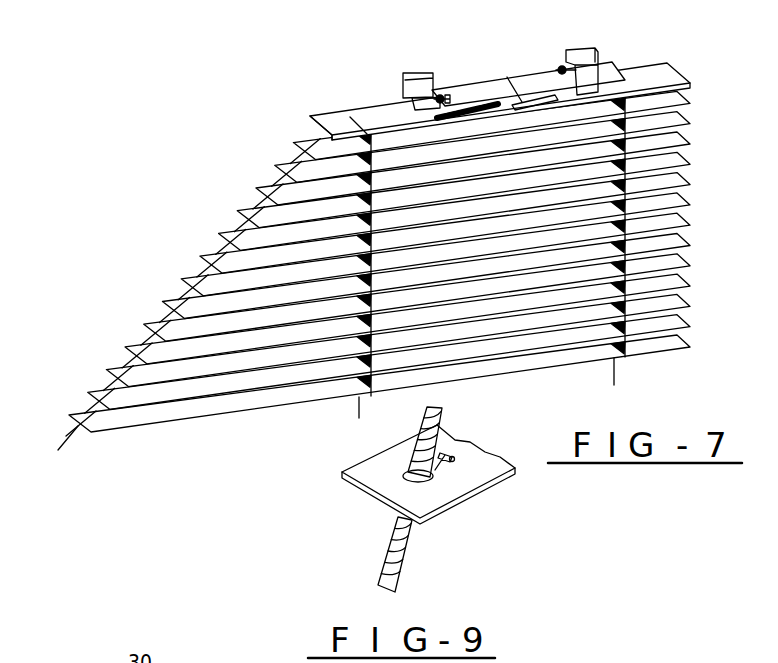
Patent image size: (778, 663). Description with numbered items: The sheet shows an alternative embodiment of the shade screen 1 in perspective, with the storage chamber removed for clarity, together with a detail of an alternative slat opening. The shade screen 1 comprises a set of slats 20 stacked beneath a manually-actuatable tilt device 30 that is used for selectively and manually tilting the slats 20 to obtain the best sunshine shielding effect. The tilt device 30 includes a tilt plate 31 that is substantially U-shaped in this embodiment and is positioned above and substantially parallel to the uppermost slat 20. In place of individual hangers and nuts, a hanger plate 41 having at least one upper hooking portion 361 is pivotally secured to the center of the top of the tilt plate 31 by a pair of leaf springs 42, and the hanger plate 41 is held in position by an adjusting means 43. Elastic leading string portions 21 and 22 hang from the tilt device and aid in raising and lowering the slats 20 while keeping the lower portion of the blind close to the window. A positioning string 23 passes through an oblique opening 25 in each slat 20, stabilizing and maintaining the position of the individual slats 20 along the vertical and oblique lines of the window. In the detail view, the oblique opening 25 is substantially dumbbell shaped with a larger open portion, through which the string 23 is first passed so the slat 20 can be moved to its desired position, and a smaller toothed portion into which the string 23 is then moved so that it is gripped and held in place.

In FIG. 7, the shade screen 1 is at (178, 196).
In FIG. 7, the slats 20 is at (683, 120).
In FIG. 9, the slats 20 is at (368, 487).
In FIG. 7, the leading string portion 21 is at (359, 397).
In FIG. 7, the leading string portion 22 is at (612, 372).
In FIG. 7, the positioning string 23 is at (78, 426).
In FIG. 9, the positioning string 23 is at (435, 425).
In FIG. 9, the oblique opening 25 is at (442, 470).
In FIG. 7, the manually-actuatable tilt device 30 is at (306, 106).
In FIG. 7, the tilt plate 31 is at (370, 117).
In FIG. 7, the upper hooking portion 361 is at (422, 80).
In FIG. 7, the hanger plate 41 is at (488, 85).
In FIG. 7, the leaf springs 42 is at (435, 97).
In FIG. 7, the adjusting means 43 is at (548, 115).